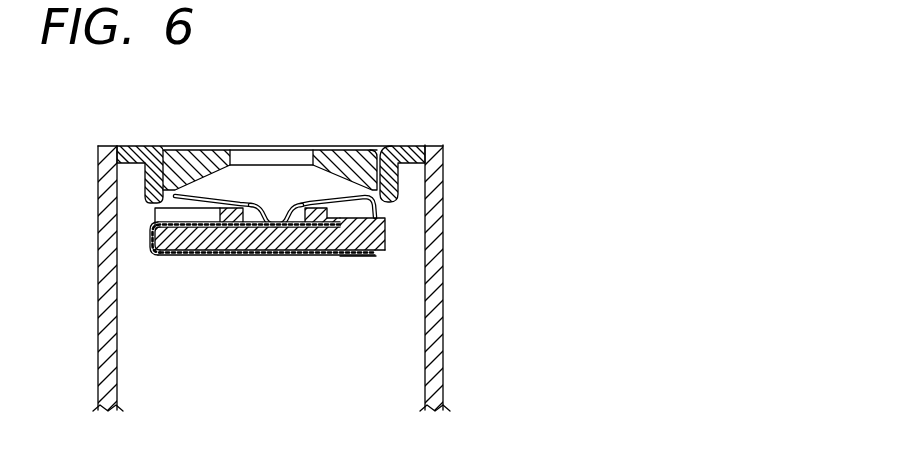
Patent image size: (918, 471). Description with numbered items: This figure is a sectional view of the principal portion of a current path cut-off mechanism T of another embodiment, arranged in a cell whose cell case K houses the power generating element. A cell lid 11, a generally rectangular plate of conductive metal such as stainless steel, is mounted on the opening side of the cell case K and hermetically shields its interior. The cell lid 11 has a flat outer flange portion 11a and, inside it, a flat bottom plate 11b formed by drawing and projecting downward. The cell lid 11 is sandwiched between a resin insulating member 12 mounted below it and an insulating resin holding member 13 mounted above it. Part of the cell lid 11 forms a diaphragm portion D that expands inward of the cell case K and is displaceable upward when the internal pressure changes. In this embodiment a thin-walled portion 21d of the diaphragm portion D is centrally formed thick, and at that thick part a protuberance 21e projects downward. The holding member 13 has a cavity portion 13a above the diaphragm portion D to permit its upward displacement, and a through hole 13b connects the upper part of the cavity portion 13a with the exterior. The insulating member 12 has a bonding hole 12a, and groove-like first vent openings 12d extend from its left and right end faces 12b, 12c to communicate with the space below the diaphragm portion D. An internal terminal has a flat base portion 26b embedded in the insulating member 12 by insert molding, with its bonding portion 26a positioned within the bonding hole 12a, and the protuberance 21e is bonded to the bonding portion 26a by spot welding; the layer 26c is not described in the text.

The current path cut-off mechanism T is at (90, 141).
The cell case K is at (105, 285).
The cell lid 11 is at (289, 197).
The flange portion 11a is at (127, 145).
The bottom plate 11b is at (362, 256).
The insulating member 12 is at (319, 238).
The bonding hole 12a is at (283, 256).
The left end face 12b is at (143, 252).
The right end face 12c is at (383, 228).
The first vent opening 12d is at (385, 208).
The holding member 13 is at (263, 126).
The cavity portion 13a is at (298, 165).
The through hole 13b is at (252, 149).
The diaphragm portion D is at (281, 131).
The thin-walled portion 21d is at (232, 200).
The protuberance 21e is at (271, 212).
The bonding portion 26a is at (243, 256).
The base portion 26b is at (195, 256).
The side electrode layer 26c is at (223, 256).